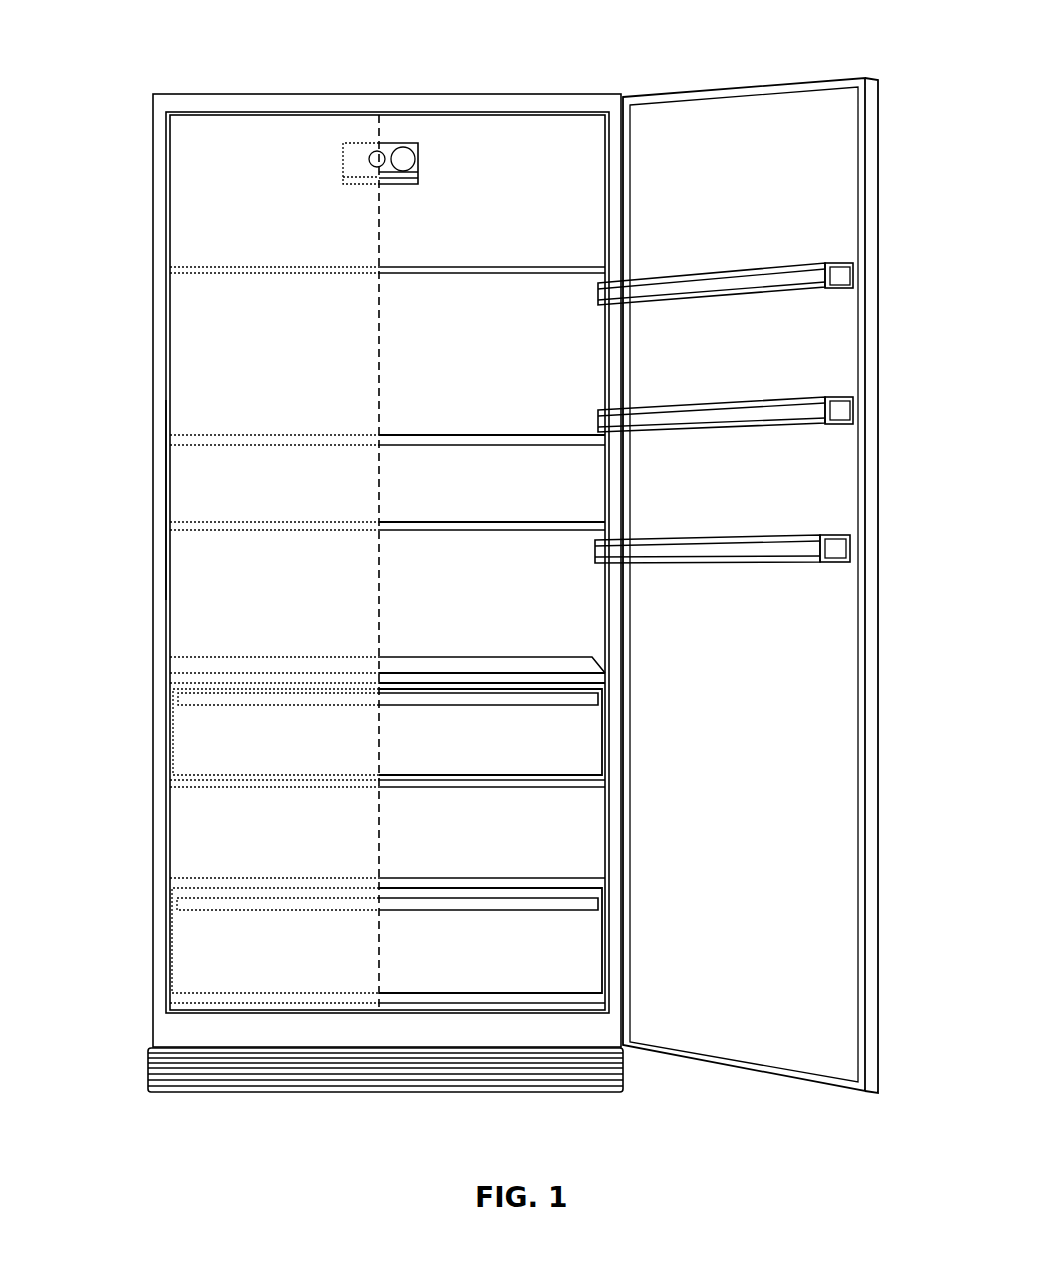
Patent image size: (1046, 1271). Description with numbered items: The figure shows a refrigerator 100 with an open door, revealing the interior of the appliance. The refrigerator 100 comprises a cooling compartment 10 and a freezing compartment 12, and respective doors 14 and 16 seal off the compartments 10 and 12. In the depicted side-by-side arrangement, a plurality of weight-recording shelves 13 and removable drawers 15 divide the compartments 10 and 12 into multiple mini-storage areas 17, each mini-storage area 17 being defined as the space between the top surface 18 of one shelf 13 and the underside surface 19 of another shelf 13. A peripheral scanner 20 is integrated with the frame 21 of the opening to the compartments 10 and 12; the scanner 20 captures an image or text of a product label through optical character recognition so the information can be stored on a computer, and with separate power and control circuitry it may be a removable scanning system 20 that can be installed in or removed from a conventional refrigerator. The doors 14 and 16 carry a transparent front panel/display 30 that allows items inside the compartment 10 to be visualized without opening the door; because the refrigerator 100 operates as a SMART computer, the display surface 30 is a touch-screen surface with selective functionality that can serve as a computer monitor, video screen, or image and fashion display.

The refrigerator 100 is at (537, 50).
The cooling compartment 10 is at (496, 331).
The freezing compartment 12 is at (281, 326).
The weight-recording shelves 13 is at (667, 432).
The door 14 is at (770, 118).
The removable drawers 15 is at (480, 790).
The door 16 is at (210, 143).
The mini-storage areas 17 is at (567, 572).
The top surface 18 is at (546, 656).
The underside surface 19 is at (449, 528).
The peripheral scanner 20 is at (165, 967).
The frame 21 is at (158, 865).
The transparent front panel/display 30 is at (191, 490).